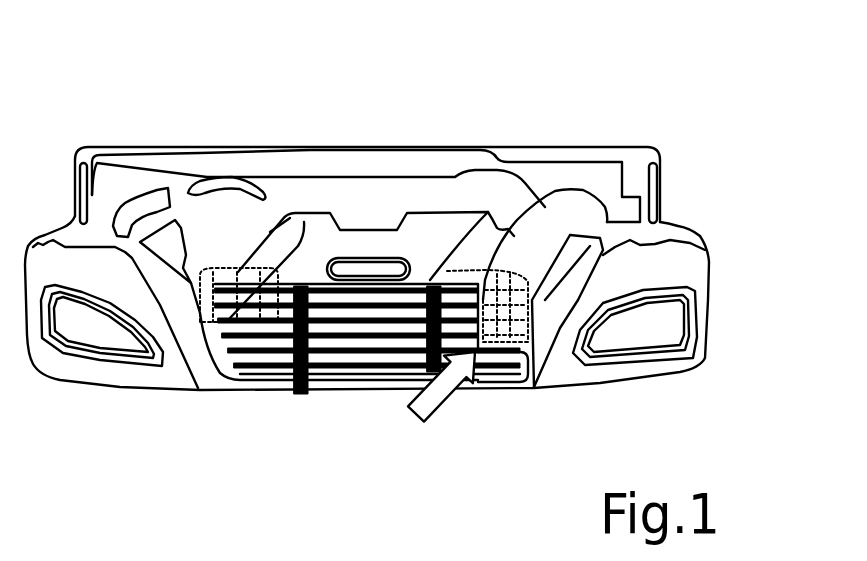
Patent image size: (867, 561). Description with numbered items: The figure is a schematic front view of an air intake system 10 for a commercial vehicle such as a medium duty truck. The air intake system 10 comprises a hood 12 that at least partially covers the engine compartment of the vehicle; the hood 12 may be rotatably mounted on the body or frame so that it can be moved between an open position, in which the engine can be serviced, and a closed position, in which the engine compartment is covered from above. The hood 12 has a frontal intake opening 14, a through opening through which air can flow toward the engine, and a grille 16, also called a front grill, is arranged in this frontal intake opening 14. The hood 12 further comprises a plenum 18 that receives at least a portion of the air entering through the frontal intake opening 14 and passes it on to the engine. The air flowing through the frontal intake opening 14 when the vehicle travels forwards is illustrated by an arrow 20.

The air intake system 10 is at (653, 144).
The hood 12 is at (706, 268).
The frontal intake opening 14 is at (388, 358).
The grille 16 is at (294, 392).
The plenum 18 is at (558, 176).
The arrow 20 is at (433, 396).